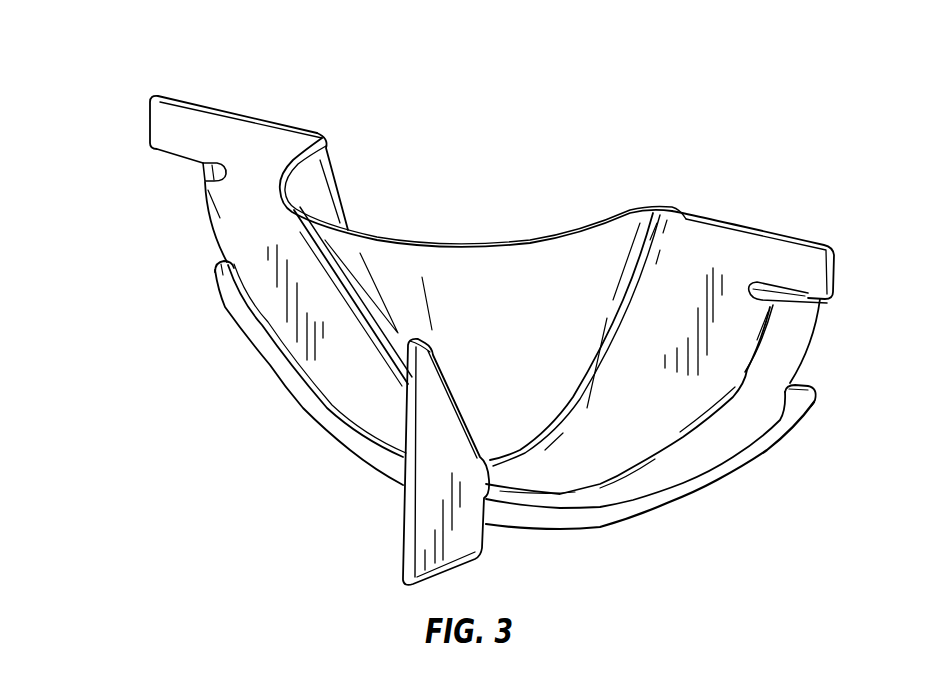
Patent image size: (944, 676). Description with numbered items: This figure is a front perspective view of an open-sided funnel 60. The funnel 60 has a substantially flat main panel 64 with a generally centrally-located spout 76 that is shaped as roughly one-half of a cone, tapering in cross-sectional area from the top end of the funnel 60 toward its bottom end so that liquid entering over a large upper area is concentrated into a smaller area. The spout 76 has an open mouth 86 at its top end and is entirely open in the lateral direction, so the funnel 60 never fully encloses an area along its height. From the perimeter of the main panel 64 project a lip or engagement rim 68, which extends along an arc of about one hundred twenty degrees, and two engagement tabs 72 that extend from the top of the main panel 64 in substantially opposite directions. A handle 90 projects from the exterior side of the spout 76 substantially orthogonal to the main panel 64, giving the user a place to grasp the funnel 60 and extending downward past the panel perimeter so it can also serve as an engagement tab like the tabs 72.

The funnel 60 is at (669, 151).
The engagement tabs 72 is at (163, 122).
The open mouth 86 is at (438, 247).
The spout 76 is at (555, 287).
The engagement rim 68 is at (662, 500).
The main panel 64 is at (265, 273).
The handle 90 is at (424, 518).